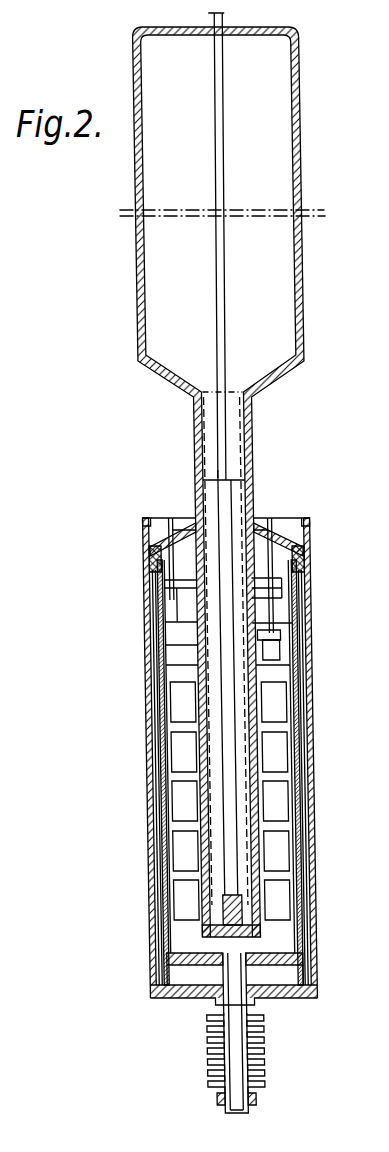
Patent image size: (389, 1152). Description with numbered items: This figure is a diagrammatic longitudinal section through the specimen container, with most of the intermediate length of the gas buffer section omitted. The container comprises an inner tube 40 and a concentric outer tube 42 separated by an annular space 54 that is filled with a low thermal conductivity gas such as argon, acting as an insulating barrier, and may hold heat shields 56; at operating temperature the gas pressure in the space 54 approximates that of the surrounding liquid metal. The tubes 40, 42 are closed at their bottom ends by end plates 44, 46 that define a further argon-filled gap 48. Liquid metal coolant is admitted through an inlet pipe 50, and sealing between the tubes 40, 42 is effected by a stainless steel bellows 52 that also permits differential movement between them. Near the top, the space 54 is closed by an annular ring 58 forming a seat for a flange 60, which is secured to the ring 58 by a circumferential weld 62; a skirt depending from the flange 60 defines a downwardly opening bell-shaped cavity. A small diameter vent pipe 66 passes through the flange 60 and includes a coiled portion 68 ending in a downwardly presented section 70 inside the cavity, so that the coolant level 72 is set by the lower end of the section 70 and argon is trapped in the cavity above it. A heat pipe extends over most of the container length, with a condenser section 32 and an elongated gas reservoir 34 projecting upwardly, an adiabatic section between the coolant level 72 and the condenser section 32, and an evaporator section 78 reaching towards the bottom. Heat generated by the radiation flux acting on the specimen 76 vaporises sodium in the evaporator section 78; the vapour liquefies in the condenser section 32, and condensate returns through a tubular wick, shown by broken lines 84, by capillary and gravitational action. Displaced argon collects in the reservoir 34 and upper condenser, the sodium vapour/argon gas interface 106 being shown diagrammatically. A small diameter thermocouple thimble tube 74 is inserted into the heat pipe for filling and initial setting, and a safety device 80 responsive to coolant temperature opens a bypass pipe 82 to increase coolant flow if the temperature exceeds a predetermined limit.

The condenser section 32 is at (246, 412).
The gas reservoir 34 is at (136, 247).
The inner tube 40 is at (296, 767).
The outer tube 42 is at (287, 667).
The end plate 44 is at (166, 992).
The end plate 46 is at (181, 953).
The gap 48 is at (262, 973).
The inlet pipe 50 is at (215, 1052).
The stainless steel bellows 52 is at (247, 1030).
The space 54 is at (148, 798).
The heat shields 56 is at (291, 715).
The annular ring 58 is at (139, 555).
The flange 60 is at (176, 522).
The circumferential weld 62 is at (134, 521).
The small diameter pipe 66 is at (174, 518).
The coiled portion 68 is at (163, 590).
The downwardly presented section 70 is at (165, 615).
The coolant level 72 is at (276, 618).
The thermocouple thimble tube 74 is at (218, 266).
The specimen 76 is at (262, 803).
The evaporator section 78 is at (246, 847).
The safety device 80 is at (270, 636).
The bypass pipe 82 is at (261, 517).
The tubular wick 84 is at (237, 443).
The sodium vapour/argon gas interface 106 is at (209, 472).